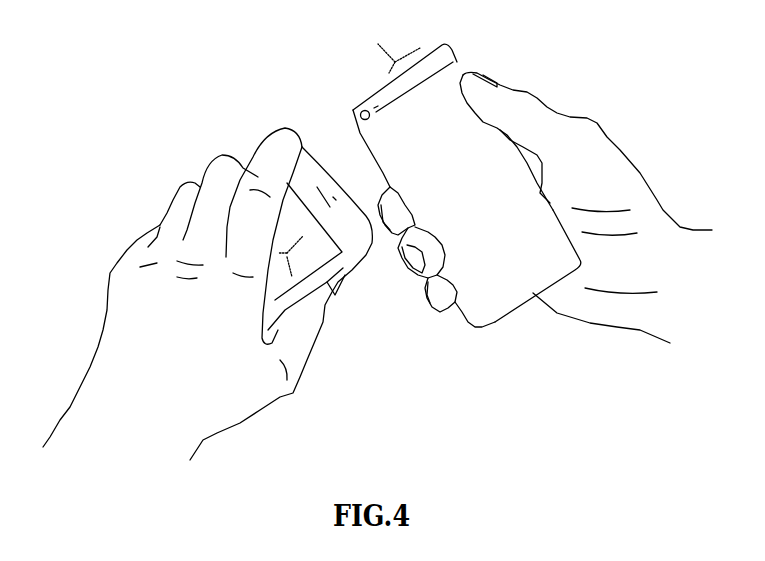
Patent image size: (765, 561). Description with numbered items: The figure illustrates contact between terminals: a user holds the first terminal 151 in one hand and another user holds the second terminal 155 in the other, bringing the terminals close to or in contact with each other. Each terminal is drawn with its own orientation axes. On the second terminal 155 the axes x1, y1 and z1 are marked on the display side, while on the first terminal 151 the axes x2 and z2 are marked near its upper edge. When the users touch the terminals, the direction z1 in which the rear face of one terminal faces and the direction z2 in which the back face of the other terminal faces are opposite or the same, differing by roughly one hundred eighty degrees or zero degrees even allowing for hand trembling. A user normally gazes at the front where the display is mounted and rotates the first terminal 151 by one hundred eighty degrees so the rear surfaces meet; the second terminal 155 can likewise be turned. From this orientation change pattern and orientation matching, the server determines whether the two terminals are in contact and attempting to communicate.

The second terminal 155 is at (207, 237).
The first terminal 151 is at (532, 180).
The x-axis of first terminal x1 is at (287, 273).
The y-axis of first terminal y1 is at (302, 242).
The direction in which the rear face of the first terminal faces z1 is at (291, 258).
The x-axis of second terminal x2 is at (400, 46).
The direction in which the back face of the second terminal faces z2 is at (385, 72).